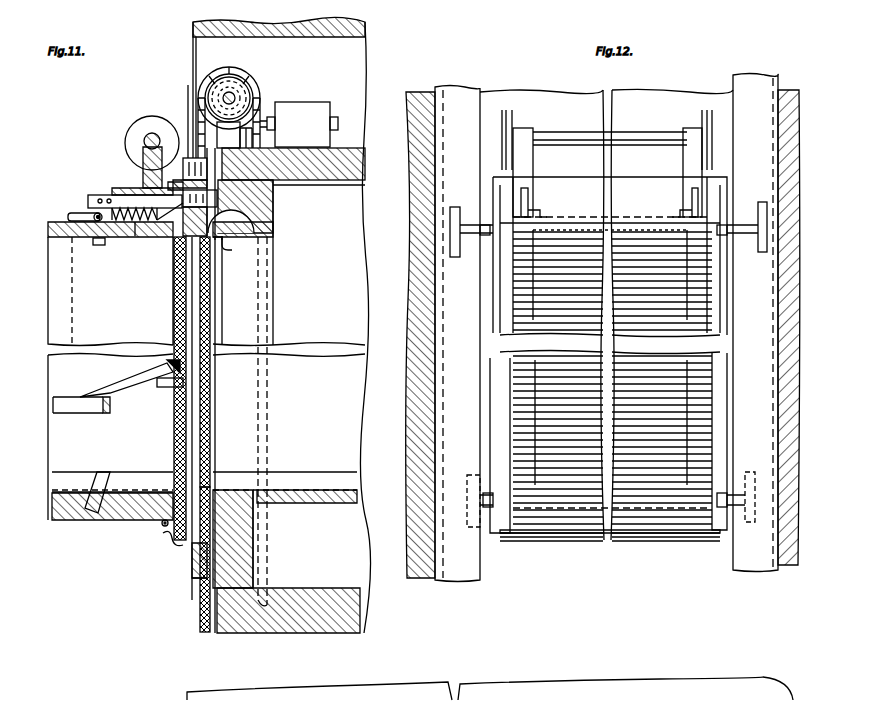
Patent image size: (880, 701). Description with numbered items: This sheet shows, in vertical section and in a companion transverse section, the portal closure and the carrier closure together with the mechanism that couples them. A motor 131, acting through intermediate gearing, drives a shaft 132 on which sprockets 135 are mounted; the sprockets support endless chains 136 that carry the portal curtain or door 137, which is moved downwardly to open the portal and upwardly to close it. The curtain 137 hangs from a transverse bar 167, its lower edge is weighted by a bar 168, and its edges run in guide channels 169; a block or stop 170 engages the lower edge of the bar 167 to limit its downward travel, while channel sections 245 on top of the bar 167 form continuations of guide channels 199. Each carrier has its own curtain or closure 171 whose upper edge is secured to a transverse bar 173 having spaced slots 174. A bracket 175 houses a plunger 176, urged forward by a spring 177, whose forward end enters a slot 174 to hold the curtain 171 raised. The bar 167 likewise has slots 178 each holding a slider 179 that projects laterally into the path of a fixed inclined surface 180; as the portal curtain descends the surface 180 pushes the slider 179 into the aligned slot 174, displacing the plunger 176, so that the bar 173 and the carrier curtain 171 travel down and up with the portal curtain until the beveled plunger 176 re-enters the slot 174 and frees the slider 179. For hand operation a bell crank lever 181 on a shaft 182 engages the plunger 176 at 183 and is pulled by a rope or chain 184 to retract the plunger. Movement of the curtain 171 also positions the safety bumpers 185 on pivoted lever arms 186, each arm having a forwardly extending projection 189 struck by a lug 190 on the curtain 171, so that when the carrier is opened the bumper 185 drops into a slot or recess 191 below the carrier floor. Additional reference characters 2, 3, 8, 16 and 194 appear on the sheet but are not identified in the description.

In FIG. 11, the shutter 2 is at (72, 520).
In FIG. 12, the shutter 2 is at (690, 542).
In FIG. 12, the hinge 3 is at (455, 207).
In FIG. 12, the hinge 8 is at (472, 527).
In FIG. 11, the sill 16 is at (303, 503).
In FIG. 11, the motor 131 is at (300, 112).
In FIG. 11, the shaft 132 is at (235, 93).
In FIG. 11, the sprockets 135 is at (229, 77).
In FIG. 11, the endless belts or chains 136 is at (262, 80).
In FIG. 11, the curtain or door 137 is at (210, 310).
In FIG. 11, the transverse bar 167 is at (192, 158).
In FIG. 11, the weighting bar 168 is at (190, 550).
In FIG. 11, the guide channels 169 is at (210, 460).
In FIG. 11, the block or stop 170 is at (196, 582).
In FIG. 11, the carrier curtain or closure 171 is at (174, 318).
In FIG. 12, the carrier curtain or closure 171 is at (556, 540).
In FIG. 11, the transverse bar 173 is at (166, 236).
In FIG. 12, the transverse bar 173 is at (596, 188).
In FIG. 11, the spaced slots 174 is at (145, 236).
In FIG. 12, the spaced slots 174 is at (536, 212).
In FIG. 11, the bracket 175 is at (120, 188).
In FIG. 12, the bracket 175 is at (525, 133).
In FIG. 11, the plunger 176 is at (131, 188).
In FIG. 12, the plunger 176 is at (525, 195).
In FIG. 11, the spring 177 is at (118, 236).
In FIG. 11, the slots 178 is at (273, 188).
In FIG. 11, the slider 179 is at (239, 244).
In FIG. 11, the fixed inclined surface 180 is at (235, 250).
In FIG. 11, the bell crank lever 181 is at (75, 208).
In FIG. 11, the shaft 182 is at (86, 236).
In FIG. 11, the plunger engagement point 183 is at (100, 198).
In FIG. 11, the rope or chain 184 is at (74, 290).
In FIG. 11, the bumpers 185 is at (108, 413).
In FIG. 11, the lever arms 186 is at (75, 413).
In FIG. 11, the forwardly extending projection 189 is at (130, 378).
In FIG. 11, the lug 190 is at (166, 387).
In FIG. 11, the slot or recess 191 is at (108, 478).
In FIG. 11, the housing 194 is at (276, 250).
In FIG. 11, the guide channels 199 is at (330, 472).
In FIG. 11, the channel sections 245 is at (177, 121).